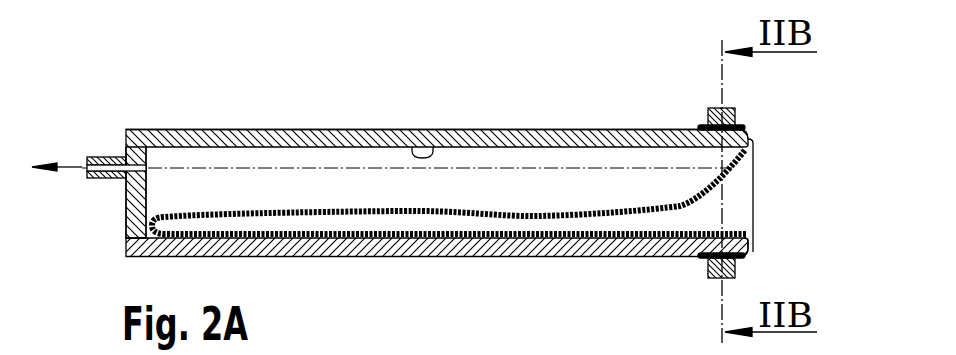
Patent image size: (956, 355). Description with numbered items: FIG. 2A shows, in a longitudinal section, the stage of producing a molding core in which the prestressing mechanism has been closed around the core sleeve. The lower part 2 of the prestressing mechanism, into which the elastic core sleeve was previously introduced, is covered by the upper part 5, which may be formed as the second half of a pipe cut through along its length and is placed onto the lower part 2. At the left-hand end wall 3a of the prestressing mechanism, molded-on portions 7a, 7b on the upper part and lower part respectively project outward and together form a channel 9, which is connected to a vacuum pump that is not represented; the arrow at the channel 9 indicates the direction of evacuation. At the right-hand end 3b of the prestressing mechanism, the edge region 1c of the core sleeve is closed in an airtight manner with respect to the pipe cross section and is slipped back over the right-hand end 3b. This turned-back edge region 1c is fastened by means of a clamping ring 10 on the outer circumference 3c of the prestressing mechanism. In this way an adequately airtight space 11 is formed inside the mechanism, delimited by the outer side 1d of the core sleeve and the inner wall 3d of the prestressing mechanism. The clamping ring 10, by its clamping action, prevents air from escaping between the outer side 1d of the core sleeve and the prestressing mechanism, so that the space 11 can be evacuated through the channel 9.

The lower part 2 is at (433, 248).
The housing end wall 3a is at (137, 222).
The right-hand end 3b is at (752, 250).
The outer circumference 3c is at (340, 130).
The inner wall 3d is at (427, 143).
The upper part 5 is at (235, 138).
The molded-on portion 7a is at (103, 178).
The molded-on portion 7b is at (105, 157).
The channel 9 is at (87, 157).
The clamping ring 10 is at (707, 120).
The airtight space 11 is at (270, 204).
The edge region 1c is at (745, 127).
The outer side 1d is at (545, 213).